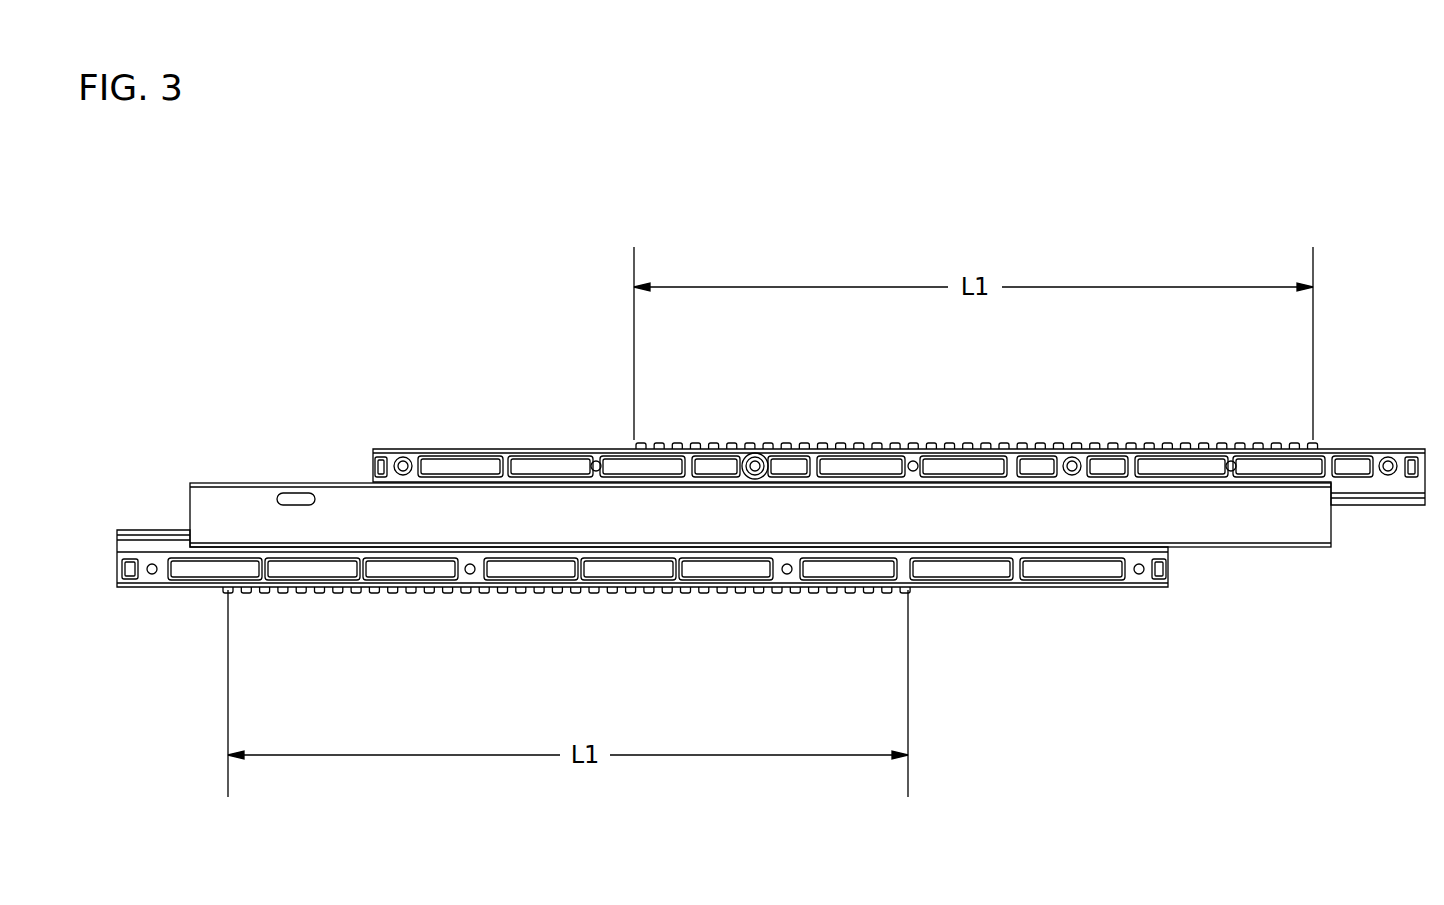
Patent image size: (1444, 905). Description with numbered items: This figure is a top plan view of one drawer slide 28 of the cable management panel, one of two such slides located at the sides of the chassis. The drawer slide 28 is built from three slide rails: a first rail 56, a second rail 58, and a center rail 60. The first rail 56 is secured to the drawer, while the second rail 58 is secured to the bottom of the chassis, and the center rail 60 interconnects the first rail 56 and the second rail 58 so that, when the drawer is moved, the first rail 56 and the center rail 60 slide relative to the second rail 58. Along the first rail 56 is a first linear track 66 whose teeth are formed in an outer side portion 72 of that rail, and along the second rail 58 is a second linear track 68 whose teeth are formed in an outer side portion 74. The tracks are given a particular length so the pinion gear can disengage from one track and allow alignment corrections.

The drawer slide 28 is at (1095, 226).
The first rail 56 is at (478, 448).
The second rail 58 is at (1068, 588).
The center rail 60 is at (360, 518).
The first linear track 66 is at (805, 448).
The second linear track 68 is at (645, 595).
The outer side portion 72 is at (571, 448).
The outer side portion 74 is at (969, 588).